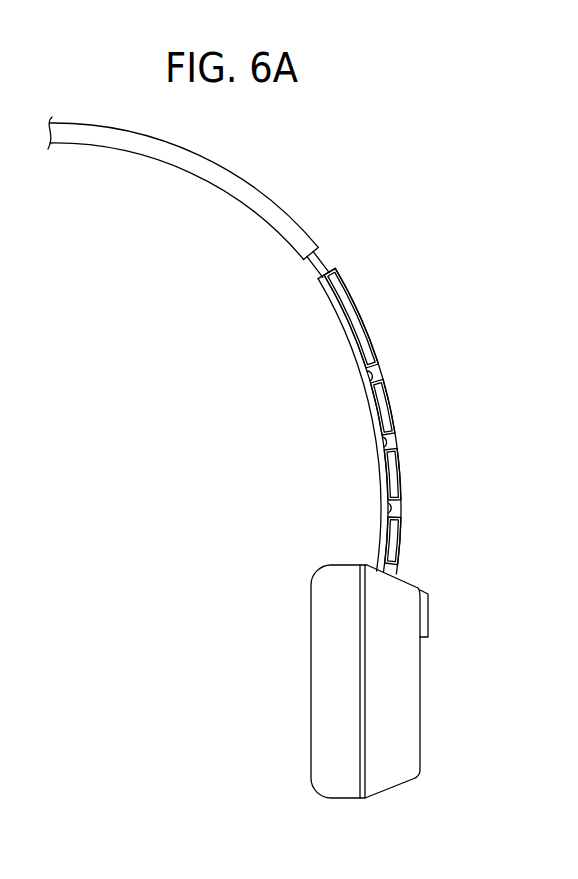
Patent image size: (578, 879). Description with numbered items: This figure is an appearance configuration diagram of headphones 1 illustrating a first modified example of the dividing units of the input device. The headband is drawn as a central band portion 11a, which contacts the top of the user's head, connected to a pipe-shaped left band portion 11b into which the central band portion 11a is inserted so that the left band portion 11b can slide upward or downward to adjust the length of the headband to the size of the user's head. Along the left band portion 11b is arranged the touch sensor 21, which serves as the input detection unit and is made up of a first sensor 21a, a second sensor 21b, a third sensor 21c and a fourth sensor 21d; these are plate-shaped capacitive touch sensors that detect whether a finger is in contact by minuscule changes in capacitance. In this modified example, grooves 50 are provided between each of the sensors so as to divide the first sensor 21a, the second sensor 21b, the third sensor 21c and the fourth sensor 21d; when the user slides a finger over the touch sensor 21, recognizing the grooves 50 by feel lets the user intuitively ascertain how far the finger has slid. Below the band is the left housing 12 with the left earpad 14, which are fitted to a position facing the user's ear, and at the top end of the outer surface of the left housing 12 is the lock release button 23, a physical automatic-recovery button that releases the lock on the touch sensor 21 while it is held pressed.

The headphones 1 is at (424, 147).
The central band portion 11a is at (287, 213).
The left band portion 11b is at (350, 290).
The touch sensor 21 is at (515, 305).
The first sensor 21a is at (370, 335).
The second sensor 21b is at (392, 412).
The third sensor 21c is at (395, 482).
The fourth sensor 21d is at (395, 540).
The groove 50 is at (383, 376).
The left housing 12 is at (420, 713).
The left earpad 14 is at (310, 701).
The lock release button 23 is at (429, 617).